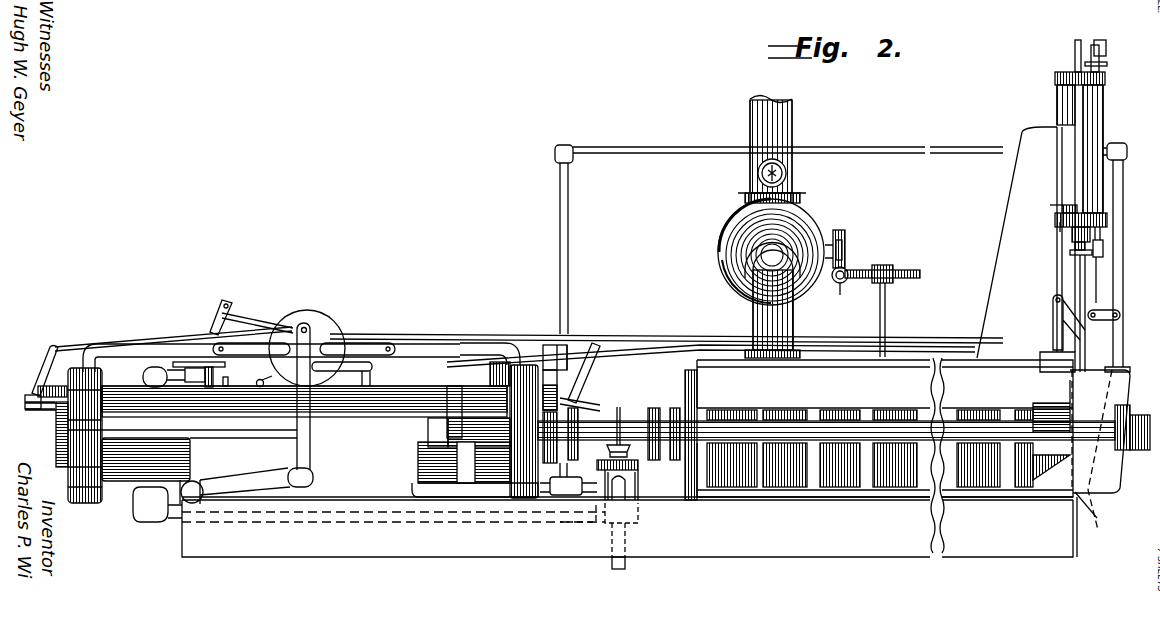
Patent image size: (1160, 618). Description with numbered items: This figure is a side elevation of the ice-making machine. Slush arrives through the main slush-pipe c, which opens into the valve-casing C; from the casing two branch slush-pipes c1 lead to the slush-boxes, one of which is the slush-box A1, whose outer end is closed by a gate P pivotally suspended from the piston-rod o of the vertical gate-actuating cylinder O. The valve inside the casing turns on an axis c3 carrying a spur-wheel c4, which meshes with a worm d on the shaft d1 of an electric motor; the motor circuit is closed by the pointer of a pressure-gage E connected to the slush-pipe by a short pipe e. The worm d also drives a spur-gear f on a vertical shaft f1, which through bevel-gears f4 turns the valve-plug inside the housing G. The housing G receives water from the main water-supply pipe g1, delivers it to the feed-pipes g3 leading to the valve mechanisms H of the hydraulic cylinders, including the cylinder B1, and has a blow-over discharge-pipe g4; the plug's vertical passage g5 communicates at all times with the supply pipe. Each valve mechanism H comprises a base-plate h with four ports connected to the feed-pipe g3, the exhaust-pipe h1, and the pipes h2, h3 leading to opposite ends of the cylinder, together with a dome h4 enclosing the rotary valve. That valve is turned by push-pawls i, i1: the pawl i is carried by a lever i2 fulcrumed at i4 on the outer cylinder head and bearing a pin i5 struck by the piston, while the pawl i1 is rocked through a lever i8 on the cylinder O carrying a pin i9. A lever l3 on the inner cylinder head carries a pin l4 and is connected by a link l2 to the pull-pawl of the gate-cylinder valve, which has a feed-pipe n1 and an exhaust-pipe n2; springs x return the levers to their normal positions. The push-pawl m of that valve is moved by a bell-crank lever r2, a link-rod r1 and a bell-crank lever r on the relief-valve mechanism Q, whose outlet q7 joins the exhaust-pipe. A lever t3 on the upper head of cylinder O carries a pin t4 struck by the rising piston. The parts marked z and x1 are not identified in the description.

The gate P is at (1110, 541).
The slush-box A1 is at (826, 455).
The hydraulic cylinder B1 is at (270, 437).
The feed-pipe g3 is at (355, 370).
The vertical passage g5 is at (447, 495).
The discharge-pipe g4 is at (560, 515).
The main water-supply pipe g1 is at (627, 562).
The housing G is at (640, 490).
The bevel-gears f4 is at (618, 421).
The lever l3 is at (590, 343).
The link l2 is at (625, 348).
The pin l4 is at (572, 402).
The spring x is at (555, 357).
The valve mechanism H is at (322, 324).
The base-plate h is at (304, 325).
The exhaust-pipe h1 is at (290, 325).
The pipe h2 is at (238, 343).
The pipe h3 is at (352, 352).
The dome h4 is at (143, 497).
The bell-crank lever r is at (214, 328).
The relief-valve mechanism Q is at (205, 362).
The outlet q7 is at (163, 366).
The post z is at (247, 372).
The push-pawl i is at (90, 350).
The fulcrum i4 is at (55, 370).
The pin i5 is at (45, 405).
The lever i2 is at (25, 396).
The rod x1 is at (666, 329).
The push-pawl i1 is at (538, 360).
The feed-pipe n1 is at (968, 148).
The valve-casing C is at (718, 249).
The main slush-pipe c is at (795, 134).
The pressure-gage E is at (745, 173).
The short pipe e is at (758, 193).
The branch slush-pipe c1 is at (753, 322).
The valve-axis c3 is at (840, 231).
The spur-wheel c4 is at (846, 247).
The motor shaft d1 is at (836, 285).
The worm d is at (840, 298).
The spur-gear f is at (905, 272).
The vertical shaft f1 is at (887, 330).
The gate-actuating cylinder O is at (1057, 107).
The lever t3 is at (1075, 48).
The pin t4 is at (1100, 57).
The exhaust-pipe n2 is at (1120, 148).
The push-pawl m is at (1095, 282).
The pin i9 is at (1103, 258).
The lever i8 is at (1062, 230).
The piston-rod o is at (1080, 284).
The bell-crank lever r2 is at (1105, 311).
The link-rod r1 is at (1100, 338).